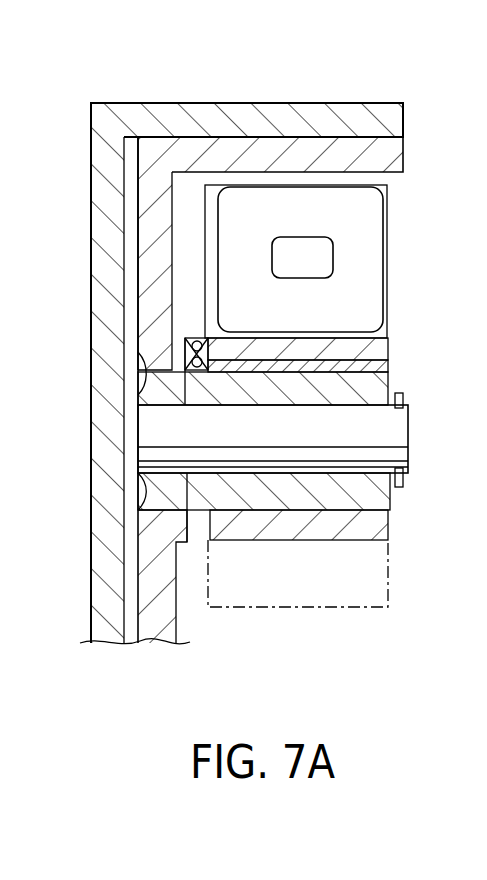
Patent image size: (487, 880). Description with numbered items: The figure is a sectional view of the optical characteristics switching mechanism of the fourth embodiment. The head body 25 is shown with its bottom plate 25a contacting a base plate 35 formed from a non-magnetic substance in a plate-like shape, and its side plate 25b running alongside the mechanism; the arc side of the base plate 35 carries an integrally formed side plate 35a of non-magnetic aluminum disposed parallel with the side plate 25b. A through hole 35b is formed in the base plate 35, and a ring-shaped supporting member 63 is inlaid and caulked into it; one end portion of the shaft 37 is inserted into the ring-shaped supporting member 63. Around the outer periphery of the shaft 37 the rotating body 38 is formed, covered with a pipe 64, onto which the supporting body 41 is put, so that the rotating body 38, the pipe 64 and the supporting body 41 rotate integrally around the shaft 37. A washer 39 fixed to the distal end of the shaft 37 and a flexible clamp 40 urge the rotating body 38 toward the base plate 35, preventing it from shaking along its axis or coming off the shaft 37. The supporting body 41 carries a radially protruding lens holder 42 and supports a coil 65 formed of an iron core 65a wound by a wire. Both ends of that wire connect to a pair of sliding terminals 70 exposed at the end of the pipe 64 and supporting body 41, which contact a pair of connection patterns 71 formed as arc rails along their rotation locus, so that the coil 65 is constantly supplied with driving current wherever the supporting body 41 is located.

The head body 25 is at (80, 102).
The bottom plate 25a is at (100, 328).
The side plate 25b is at (277, 112).
The base plate 35 is at (148, 200).
The side plate 35a is at (383, 154).
The through hole 35b is at (127, 392).
The shaft 37 is at (408, 448).
The rotating body 38 is at (393, 525).
The washer 39 is at (403, 485).
The clamp 40 is at (392, 382).
The supporting body 41 is at (385, 350).
The lens holder 42 is at (388, 582).
The ring-shaped supporting member 63 is at (182, 545).
The pipe 64 is at (380, 366).
The coil 65 is at (370, 285).
The iron core 65a is at (330, 245).
The sliding terminals 70 is at (205, 338).
The connection patterns 71 is at (195, 338).